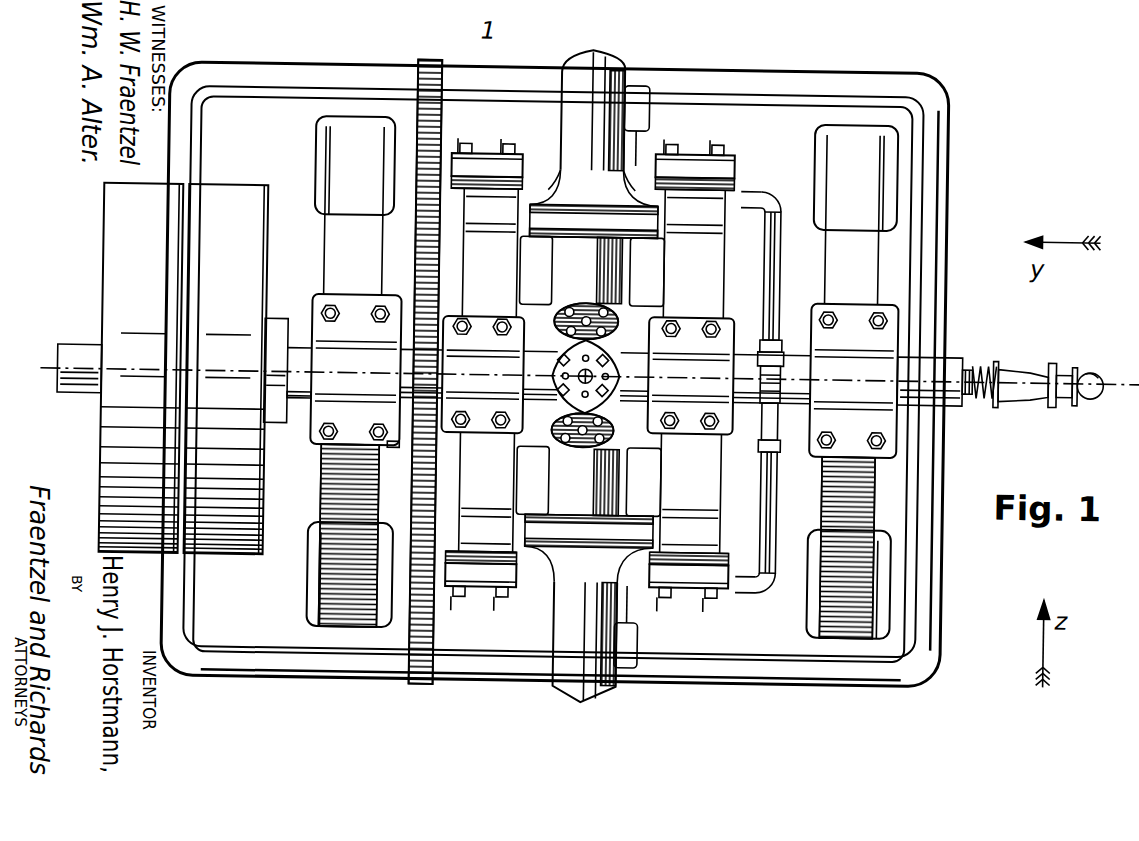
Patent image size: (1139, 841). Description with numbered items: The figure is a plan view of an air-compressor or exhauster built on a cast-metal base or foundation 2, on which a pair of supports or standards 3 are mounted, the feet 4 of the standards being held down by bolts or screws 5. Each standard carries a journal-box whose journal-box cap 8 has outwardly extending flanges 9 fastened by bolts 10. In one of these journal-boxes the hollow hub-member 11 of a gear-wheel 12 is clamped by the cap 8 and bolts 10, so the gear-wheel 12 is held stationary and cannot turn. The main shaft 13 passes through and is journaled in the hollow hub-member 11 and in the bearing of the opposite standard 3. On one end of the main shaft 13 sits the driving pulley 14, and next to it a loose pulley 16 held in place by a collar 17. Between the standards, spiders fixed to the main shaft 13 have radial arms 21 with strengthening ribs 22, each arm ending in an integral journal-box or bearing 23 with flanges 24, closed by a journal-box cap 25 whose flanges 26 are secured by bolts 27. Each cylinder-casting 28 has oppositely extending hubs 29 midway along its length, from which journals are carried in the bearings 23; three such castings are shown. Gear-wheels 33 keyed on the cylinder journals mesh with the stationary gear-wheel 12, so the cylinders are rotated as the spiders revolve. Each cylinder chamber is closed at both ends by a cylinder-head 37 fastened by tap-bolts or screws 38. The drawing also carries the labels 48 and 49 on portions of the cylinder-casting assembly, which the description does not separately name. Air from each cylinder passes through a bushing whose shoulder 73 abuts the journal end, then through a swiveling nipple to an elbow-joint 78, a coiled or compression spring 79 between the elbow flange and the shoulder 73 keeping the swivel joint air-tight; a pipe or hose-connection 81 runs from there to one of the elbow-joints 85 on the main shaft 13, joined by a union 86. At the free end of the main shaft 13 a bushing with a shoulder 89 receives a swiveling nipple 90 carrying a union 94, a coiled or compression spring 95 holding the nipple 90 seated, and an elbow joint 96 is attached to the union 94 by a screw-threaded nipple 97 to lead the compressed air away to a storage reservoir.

The base or foundation 2 is at (289, 669).
The supports or standards 3 is at (323, 244).
The feet 4 is at (312, 154).
The bolts or screws 5 is at (574, 370).
The journal-box caps 8 is at (329, 349).
The flanges 9 is at (379, 303).
The bolts 10 is at (339, 313).
The hollow hub-member 11 is at (294, 404).
The gear-wheel 12 is at (392, 453).
The main shaft 13 is at (62, 398).
The driving pulley 14 is at (101, 277).
The loose pulley 16 is at (232, 190).
The collar 17 is at (275, 323).
The radial arms 21 is at (508, 258).
The strengthening ribs 22 is at (588, 370).
The journal-box or bearing 23 is at (515, 210).
The flanges 24 is at (488, 190).
The journal-box caps 25 is at (512, 158).
The flanges 26 is at (500, 145).
The bolts 27 is at (462, 145).
The cylinder-casting 28 is at (620, 100).
The hubs 29 is at (605, 190).
The gear-wheels 33 is at (413, 73).
The cylinder-head 37 is at (590, 60).
The tap-bolts or screws 38 is at (560, 72).
The cross member 48 is at (640, 152).
The bracket 49 is at (641, 100).
The shoulder 73 is at (745, 192).
The elbow-joint 78 is at (775, 197).
The coiled or compression spring 79 is at (778, 216).
The pipe or hose-connection 81 is at (778, 246).
The elbow-joints 85 is at (782, 372).
The union 86 is at (790, 450).
The shoulder 89 is at (979, 369).
The nipple 90 is at (990, 390).
The union 94 is at (1051, 358).
The coiled or compression spring 95 is at (968, 392).
The elbow joint 96 is at (1094, 367).
The screw-threaded nipple 97 is at (1078, 384).